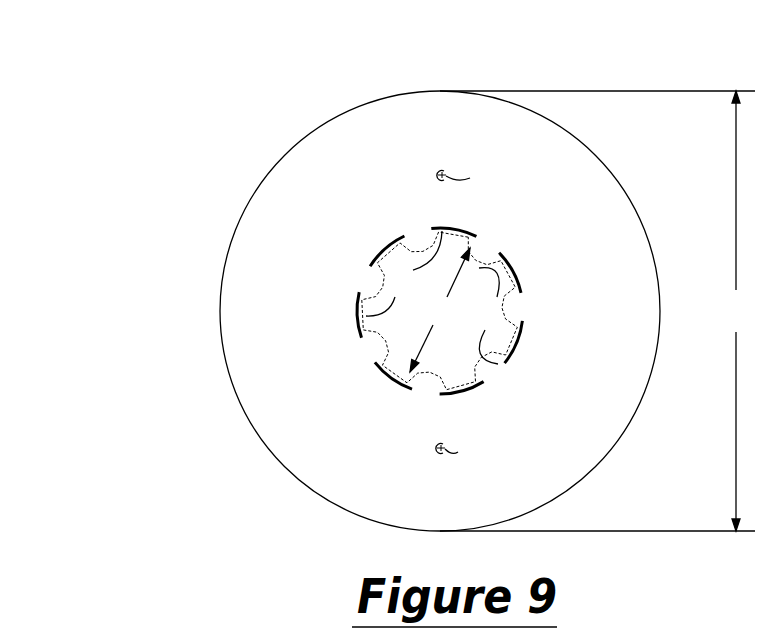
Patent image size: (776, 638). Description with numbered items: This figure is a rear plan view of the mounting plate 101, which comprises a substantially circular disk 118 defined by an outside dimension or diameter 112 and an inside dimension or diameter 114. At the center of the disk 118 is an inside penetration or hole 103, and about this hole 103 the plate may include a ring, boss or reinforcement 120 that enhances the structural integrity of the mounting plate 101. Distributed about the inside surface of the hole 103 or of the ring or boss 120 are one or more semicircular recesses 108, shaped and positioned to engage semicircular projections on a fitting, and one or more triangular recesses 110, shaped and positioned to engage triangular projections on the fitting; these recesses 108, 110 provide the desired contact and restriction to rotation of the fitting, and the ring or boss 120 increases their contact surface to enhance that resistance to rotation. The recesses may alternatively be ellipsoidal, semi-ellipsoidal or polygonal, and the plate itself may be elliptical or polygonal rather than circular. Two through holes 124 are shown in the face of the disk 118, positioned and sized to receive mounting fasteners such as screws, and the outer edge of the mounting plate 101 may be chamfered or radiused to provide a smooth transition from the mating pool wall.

The mounting plate 101 is at (584, 89).
The inside penetration or hole 103 is at (463, 311).
The semicircular recesses 108 is at (404, 273).
The triangular recesses 110 is at (491, 316).
The outside dimension 112 is at (598, 311).
The inside dimension 114 is at (440, 310).
The substantially circular disk 118 is at (335, 259).
The ring or boss 120 is at (402, 387).
The through holes 124 is at (482, 172).